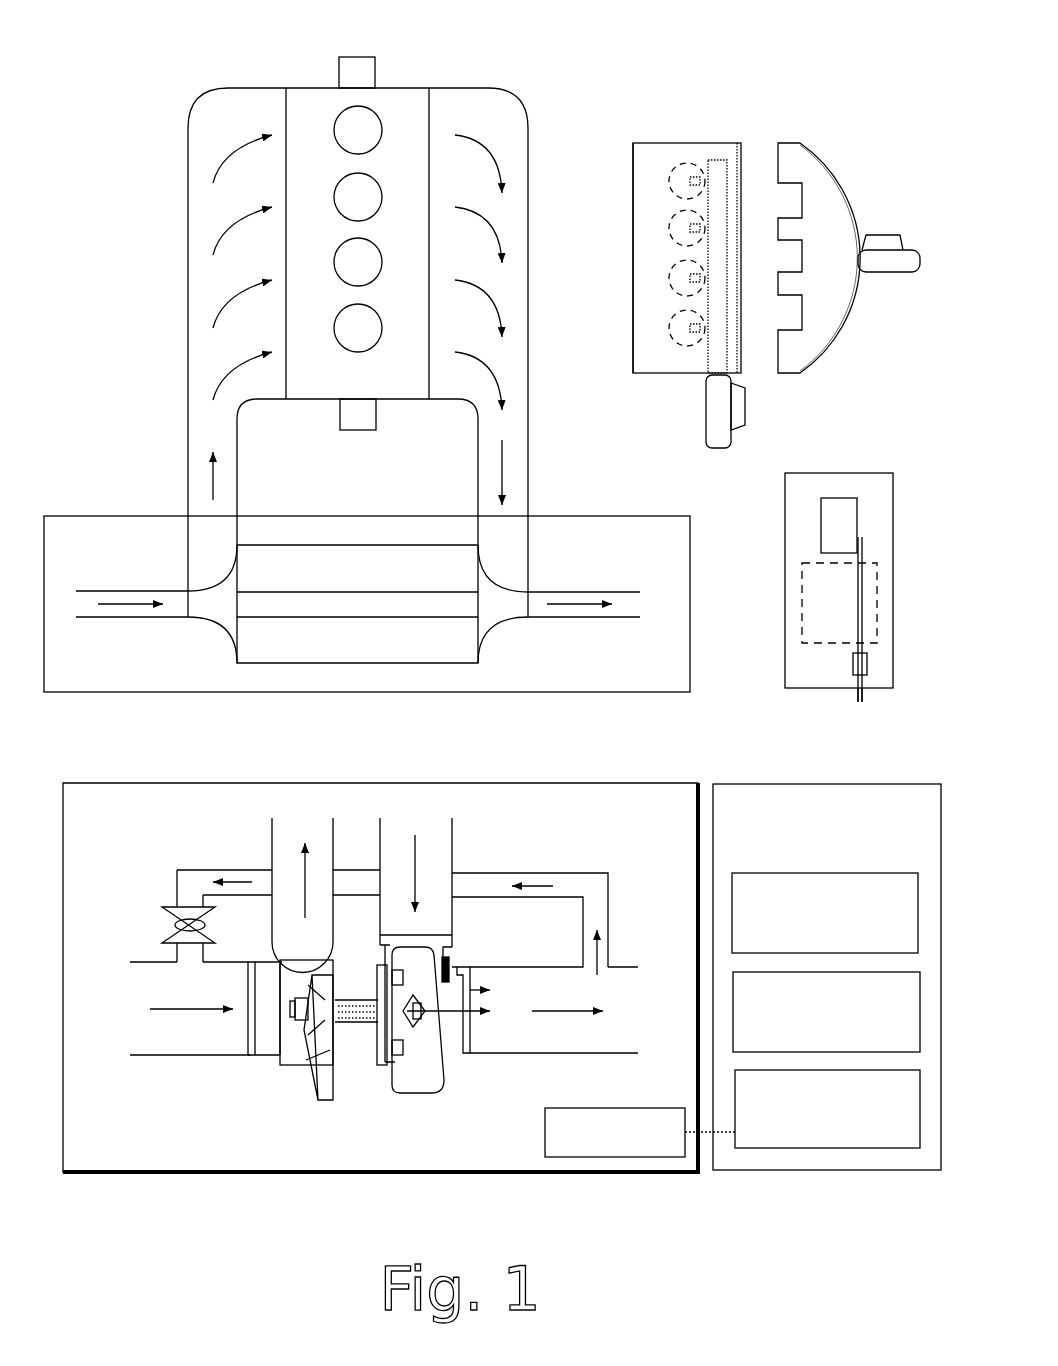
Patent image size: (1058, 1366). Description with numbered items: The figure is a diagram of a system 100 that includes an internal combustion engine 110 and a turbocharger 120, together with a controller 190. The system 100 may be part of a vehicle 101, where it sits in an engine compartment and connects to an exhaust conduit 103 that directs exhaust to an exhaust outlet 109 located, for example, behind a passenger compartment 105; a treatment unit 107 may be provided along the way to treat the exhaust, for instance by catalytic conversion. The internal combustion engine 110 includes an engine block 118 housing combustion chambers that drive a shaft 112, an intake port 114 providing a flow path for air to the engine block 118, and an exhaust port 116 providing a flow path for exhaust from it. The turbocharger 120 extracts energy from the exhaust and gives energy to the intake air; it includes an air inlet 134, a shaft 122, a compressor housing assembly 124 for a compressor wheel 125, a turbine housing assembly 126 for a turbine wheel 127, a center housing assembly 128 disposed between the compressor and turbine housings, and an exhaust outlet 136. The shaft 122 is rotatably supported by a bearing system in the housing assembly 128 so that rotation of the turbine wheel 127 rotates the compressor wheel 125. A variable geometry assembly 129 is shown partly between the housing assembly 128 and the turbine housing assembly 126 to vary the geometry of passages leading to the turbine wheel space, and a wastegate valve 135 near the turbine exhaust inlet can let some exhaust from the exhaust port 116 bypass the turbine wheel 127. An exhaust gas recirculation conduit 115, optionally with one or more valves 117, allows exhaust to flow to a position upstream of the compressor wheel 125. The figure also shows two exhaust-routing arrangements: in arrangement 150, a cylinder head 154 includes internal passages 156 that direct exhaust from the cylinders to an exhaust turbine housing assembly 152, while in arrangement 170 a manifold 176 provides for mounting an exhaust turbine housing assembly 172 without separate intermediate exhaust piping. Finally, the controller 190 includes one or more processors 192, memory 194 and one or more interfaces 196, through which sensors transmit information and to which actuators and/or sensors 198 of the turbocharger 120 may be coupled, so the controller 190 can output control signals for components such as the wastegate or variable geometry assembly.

The system 100 is at (511, 38).
The vehicle 101 is at (872, 455).
The exhaust conduit 103 is at (862, 553).
The passenger compartment 105 is at (877, 590).
The treatment unit 107 is at (867, 665).
The exhaust outlet 109 is at (862, 698).
The internal combustion engine 110 is at (322, 86).
The shaft 112 is at (362, 57).
The intake port 114 is at (208, 105).
The exhaust gas recirculation (EGR) conduit 115 is at (190, 870).
The exhaust port 116 is at (508, 100).
The valve 117 is at (165, 907).
The engine block 118 is at (342, 391).
The turbocharger 120 is at (583, 516).
The shaft 122 is at (357, 617).
The compressor housing assembly 124 is at (217, 628).
The compressor wheel 125 is at (310, 1060).
The turbine housing assembly 126 is at (500, 620).
The turbine wheel 127 is at (410, 1030).
The housing assembly 128 is at (342, 580).
The variable geometry assembly 129 is at (383, 1065).
The air inlet 134 is at (150, 591).
The wastegate valve 135 is at (452, 960).
The exhaust outlet 136 is at (587, 592).
The arrangement 150 is at (682, 125).
The exhaust turbine housing assembly 152 is at (705, 400).
The cylinder head 154 is at (633, 230).
The passages 156 is at (720, 160).
The arrangement 170 is at (835, 135).
The exhaust turbine housing assembly 172 is at (885, 272).
The manifold 176 is at (840, 320).
The controller 190 is at (810, 860).
The processors 192 is at (808, 937).
The memory 194 is at (809, 1037).
The interfaces 196 is at (810, 1133).
The actuators and/or sensors 198 is at (670, 1142).